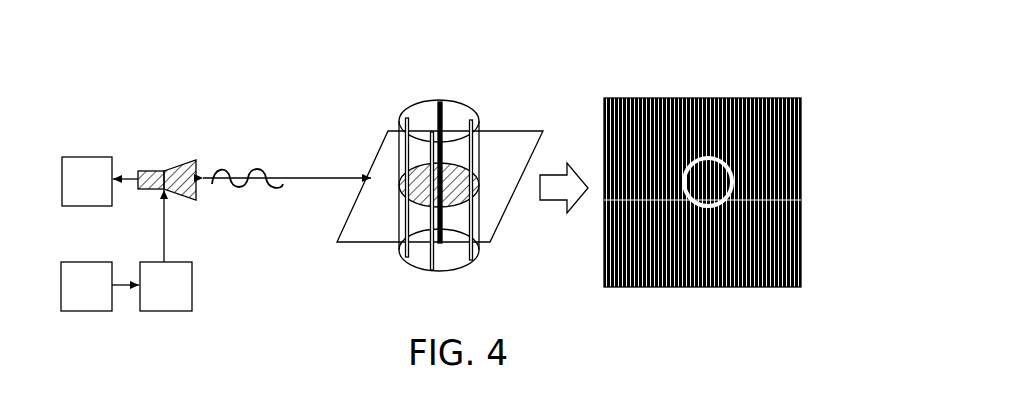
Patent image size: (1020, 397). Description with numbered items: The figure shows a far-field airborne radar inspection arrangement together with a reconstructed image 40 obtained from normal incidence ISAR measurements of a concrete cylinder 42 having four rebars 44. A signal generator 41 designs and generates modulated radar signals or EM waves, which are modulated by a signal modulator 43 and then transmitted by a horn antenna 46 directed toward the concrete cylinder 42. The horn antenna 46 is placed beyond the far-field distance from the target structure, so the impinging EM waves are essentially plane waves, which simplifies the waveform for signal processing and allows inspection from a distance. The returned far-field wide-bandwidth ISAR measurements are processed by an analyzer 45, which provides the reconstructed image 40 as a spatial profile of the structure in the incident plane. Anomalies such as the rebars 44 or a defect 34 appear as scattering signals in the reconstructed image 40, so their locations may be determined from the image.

The cubic defect 34 is at (402, 178).
The reconstructed image 40 is at (737, 98).
The signal generator 41 is at (86, 311).
The concrete cylinder 42 is at (466, 110).
The signal modulator 43 is at (164, 311).
The rebars 44 is at (407, 118).
The analyzer 45 is at (87, 157).
The horn antenna 46 is at (150, 171).